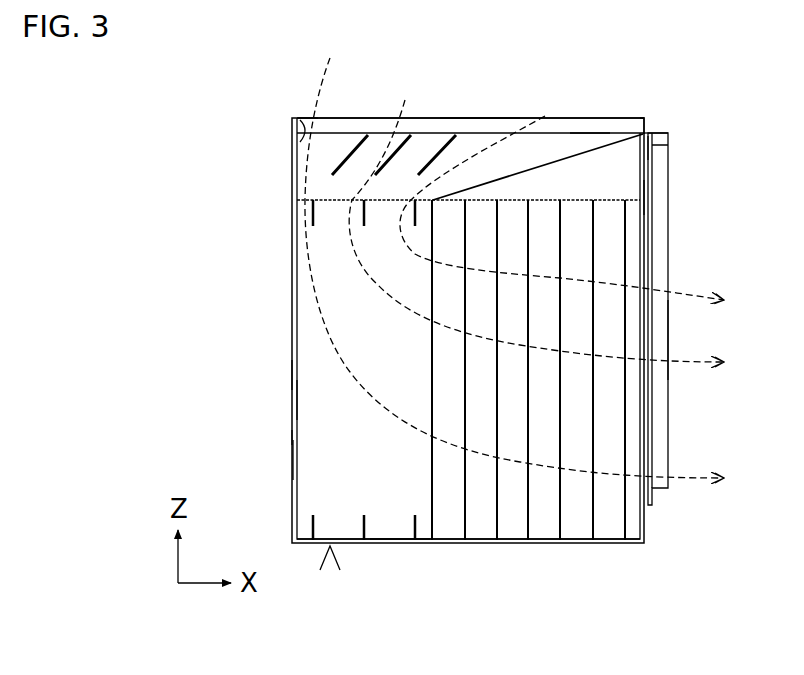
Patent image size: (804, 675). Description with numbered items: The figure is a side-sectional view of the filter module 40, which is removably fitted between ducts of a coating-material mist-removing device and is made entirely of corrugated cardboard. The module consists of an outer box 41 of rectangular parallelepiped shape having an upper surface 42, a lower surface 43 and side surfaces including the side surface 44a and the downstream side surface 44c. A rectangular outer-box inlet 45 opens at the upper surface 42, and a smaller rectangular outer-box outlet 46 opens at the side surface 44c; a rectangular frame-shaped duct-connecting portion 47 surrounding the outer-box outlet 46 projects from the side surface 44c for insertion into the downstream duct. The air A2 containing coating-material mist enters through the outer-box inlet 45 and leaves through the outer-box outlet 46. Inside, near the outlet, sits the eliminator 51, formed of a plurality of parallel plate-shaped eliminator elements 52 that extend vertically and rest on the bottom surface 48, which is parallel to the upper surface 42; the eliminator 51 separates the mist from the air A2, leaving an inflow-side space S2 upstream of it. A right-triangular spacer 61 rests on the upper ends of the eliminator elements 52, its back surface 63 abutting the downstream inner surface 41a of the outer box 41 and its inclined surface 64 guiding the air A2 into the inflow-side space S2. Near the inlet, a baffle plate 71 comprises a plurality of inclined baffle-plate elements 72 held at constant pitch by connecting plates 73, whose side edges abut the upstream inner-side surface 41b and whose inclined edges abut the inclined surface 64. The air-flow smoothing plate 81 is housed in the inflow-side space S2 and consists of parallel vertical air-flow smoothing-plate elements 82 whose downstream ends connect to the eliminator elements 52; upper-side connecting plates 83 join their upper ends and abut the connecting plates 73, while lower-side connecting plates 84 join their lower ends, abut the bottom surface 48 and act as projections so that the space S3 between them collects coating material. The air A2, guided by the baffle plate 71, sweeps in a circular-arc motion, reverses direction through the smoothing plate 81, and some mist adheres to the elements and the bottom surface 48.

The filter module 40 is at (152, 128).
The outer box 41 is at (296, 262).
The inner surface on the downstream side 41a is at (644, 134).
The inner-side surface on the upstream side 41b is at (298, 399).
The upper surface 42 is at (614, 122).
The lower surface 43 is at (553, 546).
The side surface 44a is at (291, 459).
The side surface 44c is at (652, 147).
The outer-box inlet 45 is at (308, 119).
The outer-box outlet 46 is at (640, 433).
The duct-connecting portion 47 is at (657, 340).
The bottom surface 48 is at (400, 540).
The eliminator 51 is at (485, 526).
The eliminator element 52 is at (583, 509).
The spacer 61 is at (650, 172).
The back surface 63 is at (648, 196).
The inclined surface 64 is at (565, 150).
The baffle plate 71 is at (478, 118).
The baffle-plate element 72 is at (338, 168).
The connecting plate 73 is at (590, 147).
The air-flow smoothing plate 81 is at (302, 378).
The air-flow smoothing-plate element 82 is at (307, 438).
The upper-side connecting plate 83 is at (312, 213).
The lower-side connecting plate 84 is at (312, 528).
The inflow-side space S2 is at (363, 485).
The space S3 is at (330, 546).
The air A2 is at (687, 296).